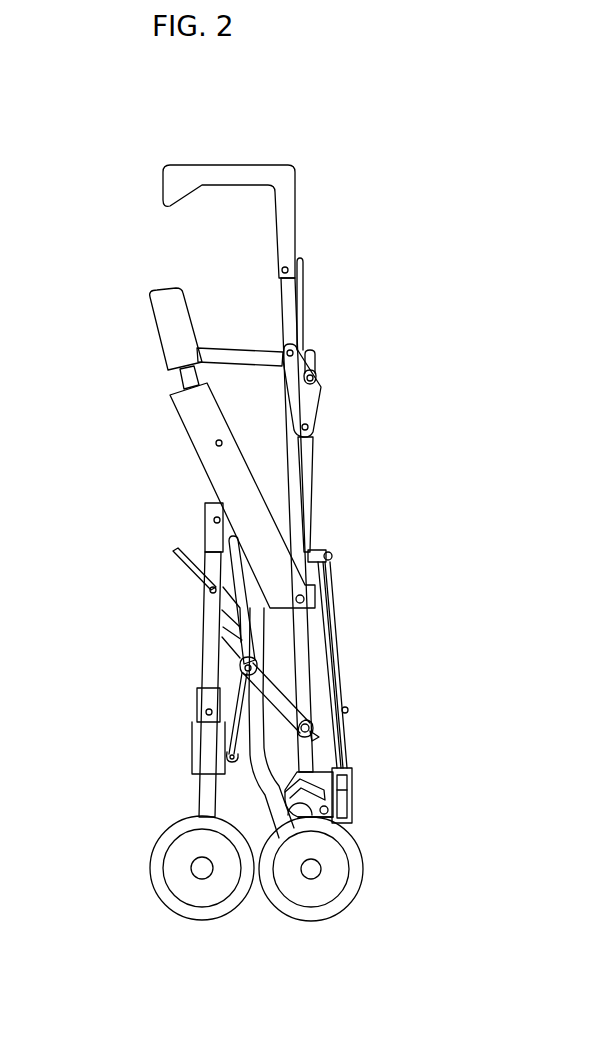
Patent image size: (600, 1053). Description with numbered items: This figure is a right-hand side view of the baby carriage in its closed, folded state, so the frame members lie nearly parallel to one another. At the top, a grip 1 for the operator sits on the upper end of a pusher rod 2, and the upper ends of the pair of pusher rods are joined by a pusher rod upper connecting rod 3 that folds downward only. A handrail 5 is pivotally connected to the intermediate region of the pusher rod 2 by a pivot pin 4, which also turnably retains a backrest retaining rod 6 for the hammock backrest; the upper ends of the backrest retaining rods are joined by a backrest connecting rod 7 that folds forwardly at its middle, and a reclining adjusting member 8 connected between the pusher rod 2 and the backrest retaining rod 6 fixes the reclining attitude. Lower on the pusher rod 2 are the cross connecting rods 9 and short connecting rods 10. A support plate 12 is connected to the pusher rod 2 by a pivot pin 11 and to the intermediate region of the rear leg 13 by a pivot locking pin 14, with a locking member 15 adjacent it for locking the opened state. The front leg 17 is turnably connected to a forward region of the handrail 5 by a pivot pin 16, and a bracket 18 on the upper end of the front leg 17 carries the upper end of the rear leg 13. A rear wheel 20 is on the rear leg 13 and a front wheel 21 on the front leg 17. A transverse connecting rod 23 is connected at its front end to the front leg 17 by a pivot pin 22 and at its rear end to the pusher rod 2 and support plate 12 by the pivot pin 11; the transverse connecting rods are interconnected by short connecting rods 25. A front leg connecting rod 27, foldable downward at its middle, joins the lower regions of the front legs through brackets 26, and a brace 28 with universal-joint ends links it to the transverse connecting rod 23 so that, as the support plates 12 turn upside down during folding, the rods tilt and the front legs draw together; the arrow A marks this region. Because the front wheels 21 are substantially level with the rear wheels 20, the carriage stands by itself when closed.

The grip 1 is at (245, 166).
The pusher rod 2 is at (298, 490).
The pusher rod upper connecting rod 3 is at (300, 282).
The pivot pin 4 is at (305, 598).
The handrail 5 is at (188, 418).
The backrest retaining rod 6 is at (310, 452).
The backrest connecting rod 7 is at (232, 350).
The reclining adjusting member 8 is at (312, 403).
The cross connecting rod 9 is at (326, 653).
The short connecting rod 10 is at (345, 818).
The pivot pin 11 is at (317, 733).
The support plate 12 is at (300, 712).
The rear leg 13 is at (313, 770).
The pivot locking pin 14 is at (240, 662).
The locking member 15 is at (352, 806).
The pivot pin 16 is at (216, 444).
The front leg 17 is at (207, 636).
The bracket 18 is at (208, 535).
The rear wheel 20 is at (327, 910).
The front wheel 21 is at (172, 907).
The pivot pin 22 is at (210, 591).
The transverse connecting rod 23 is at (257, 666).
The short connecting rod 25 is at (175, 553).
The bracket 26 is at (198, 705).
The front leg connecting rod 27 is at (197, 742).
The brace 28 is at (228, 744).
The curved frame tube (direction arrow) A is at (276, 784).